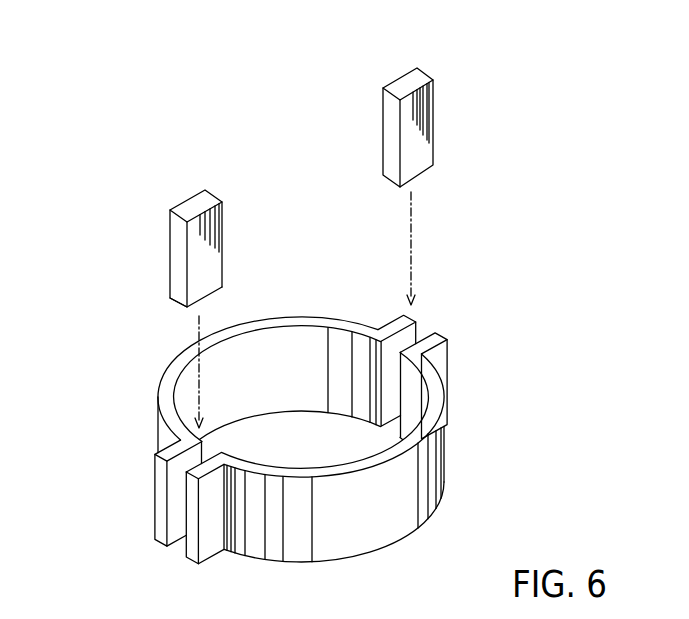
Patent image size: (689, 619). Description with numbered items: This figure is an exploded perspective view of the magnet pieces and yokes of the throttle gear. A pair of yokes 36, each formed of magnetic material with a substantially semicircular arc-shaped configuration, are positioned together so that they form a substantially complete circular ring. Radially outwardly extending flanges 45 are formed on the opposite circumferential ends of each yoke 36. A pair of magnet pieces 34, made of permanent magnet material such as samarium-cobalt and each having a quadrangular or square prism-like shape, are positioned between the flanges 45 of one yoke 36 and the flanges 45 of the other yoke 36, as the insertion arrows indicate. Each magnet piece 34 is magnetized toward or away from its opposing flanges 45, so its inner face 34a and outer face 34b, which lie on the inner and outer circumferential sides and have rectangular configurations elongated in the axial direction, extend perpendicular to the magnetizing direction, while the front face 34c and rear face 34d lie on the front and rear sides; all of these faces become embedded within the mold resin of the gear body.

The magnet piece 34 is at (273, 226).
The inner face 34a is at (390, 142).
The outer face 34b is at (178, 255).
The front face 34c is at (193, 205).
The rear face 34d is at (177, 308).
The yoke 36 is at (172, 378).
The flange 45 is at (392, 318).